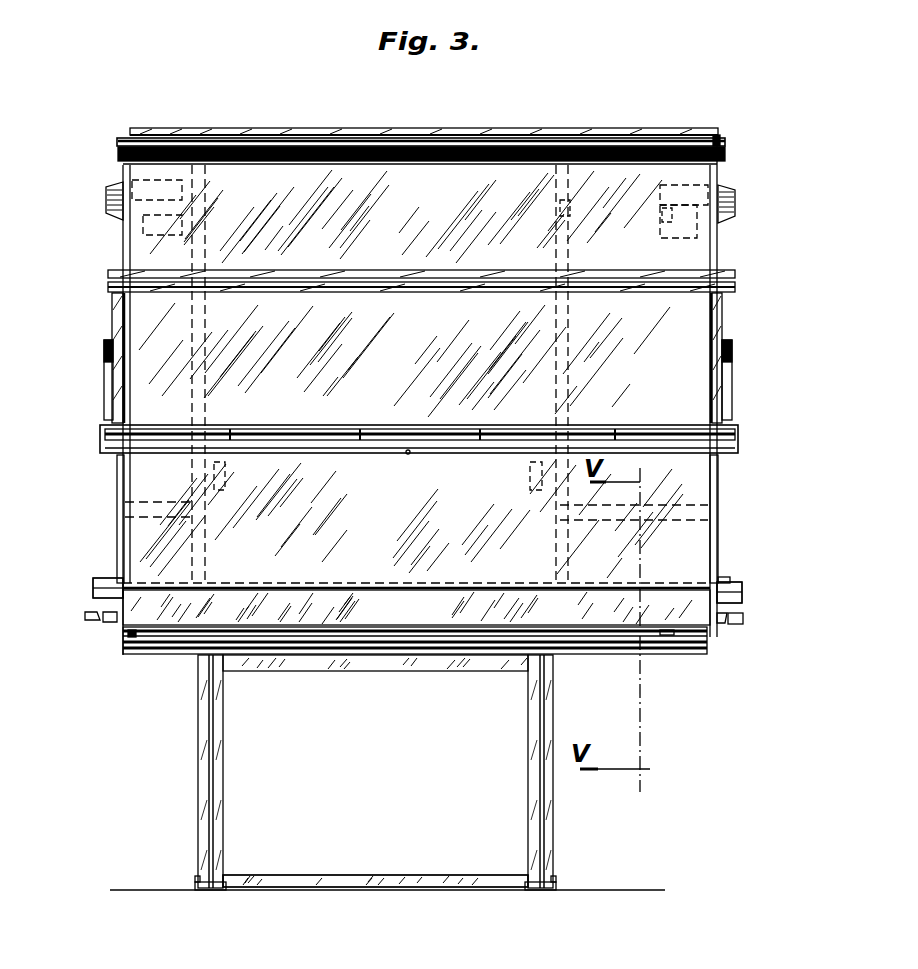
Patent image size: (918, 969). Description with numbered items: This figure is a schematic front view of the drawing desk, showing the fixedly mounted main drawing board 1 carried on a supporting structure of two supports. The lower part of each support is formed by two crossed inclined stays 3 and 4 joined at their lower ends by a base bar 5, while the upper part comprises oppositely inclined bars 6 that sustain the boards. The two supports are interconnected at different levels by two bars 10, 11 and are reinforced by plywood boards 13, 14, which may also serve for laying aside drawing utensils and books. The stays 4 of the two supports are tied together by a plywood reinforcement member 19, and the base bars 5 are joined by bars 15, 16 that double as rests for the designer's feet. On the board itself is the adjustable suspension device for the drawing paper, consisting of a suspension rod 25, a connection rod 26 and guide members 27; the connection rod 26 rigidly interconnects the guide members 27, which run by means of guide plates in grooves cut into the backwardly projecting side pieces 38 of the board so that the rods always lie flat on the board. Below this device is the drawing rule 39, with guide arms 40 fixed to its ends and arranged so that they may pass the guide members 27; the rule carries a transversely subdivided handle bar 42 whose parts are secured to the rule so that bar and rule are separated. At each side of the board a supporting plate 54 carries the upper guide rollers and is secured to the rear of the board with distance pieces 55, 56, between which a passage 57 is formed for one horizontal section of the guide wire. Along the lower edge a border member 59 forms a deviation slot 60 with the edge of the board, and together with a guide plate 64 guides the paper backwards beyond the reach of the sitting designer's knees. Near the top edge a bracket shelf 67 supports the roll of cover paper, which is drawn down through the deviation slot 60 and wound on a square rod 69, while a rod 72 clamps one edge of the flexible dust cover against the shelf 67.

The main drawing board 1 is at (400, 228).
The inclined stay 3 is at (222, 767).
The inclined stay 4 is at (208, 803).
The base bar 5 is at (198, 888).
The inclined bar 6 is at (187, 193).
The interconnecting bar 10 is at (95, 582).
The interconnecting bar 11 is at (436, 581).
The plywood board 13 is at (688, 508).
The plywood board 14 is at (728, 580).
The foot-rest bar 15 is at (313, 878).
The foot-rest bar 16 is at (375, 903).
The plywood reinforcement member 19 is at (305, 670).
The suspension rod 25 is at (455, 296).
The connection rod 26 is at (457, 288).
The guide member 27 is at (120, 314).
The side piece 38 is at (123, 535).
The drawing rule 39 is at (410, 453).
The guide arm 40 is at (110, 398).
The handle bar 42 is at (415, 433).
The supporting plate 54 is at (734, 198).
The distance piece 55 is at (688, 185).
The distance piece 56 is at (680, 238).
The passage 57 is at (667, 208).
The border member 59 is at (404, 619).
The deviation slot 60 is at (423, 587).
The guide plate 64 is at (580, 647).
The bracket shelf 67 is at (258, 136).
The square rod 69 is at (95, 624).
The rod 72 is at (290, 152).